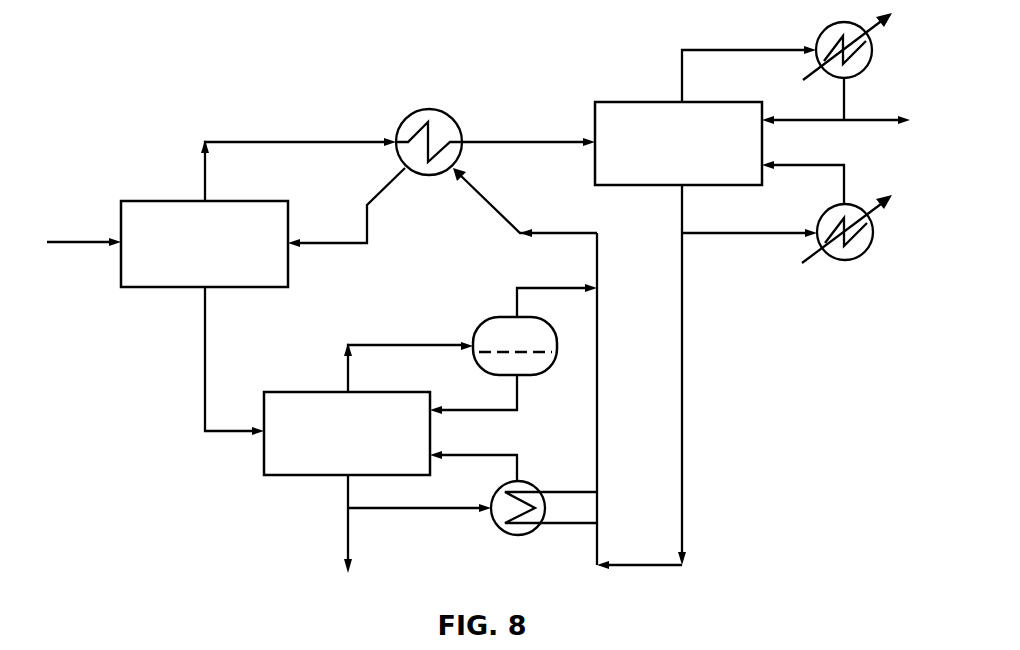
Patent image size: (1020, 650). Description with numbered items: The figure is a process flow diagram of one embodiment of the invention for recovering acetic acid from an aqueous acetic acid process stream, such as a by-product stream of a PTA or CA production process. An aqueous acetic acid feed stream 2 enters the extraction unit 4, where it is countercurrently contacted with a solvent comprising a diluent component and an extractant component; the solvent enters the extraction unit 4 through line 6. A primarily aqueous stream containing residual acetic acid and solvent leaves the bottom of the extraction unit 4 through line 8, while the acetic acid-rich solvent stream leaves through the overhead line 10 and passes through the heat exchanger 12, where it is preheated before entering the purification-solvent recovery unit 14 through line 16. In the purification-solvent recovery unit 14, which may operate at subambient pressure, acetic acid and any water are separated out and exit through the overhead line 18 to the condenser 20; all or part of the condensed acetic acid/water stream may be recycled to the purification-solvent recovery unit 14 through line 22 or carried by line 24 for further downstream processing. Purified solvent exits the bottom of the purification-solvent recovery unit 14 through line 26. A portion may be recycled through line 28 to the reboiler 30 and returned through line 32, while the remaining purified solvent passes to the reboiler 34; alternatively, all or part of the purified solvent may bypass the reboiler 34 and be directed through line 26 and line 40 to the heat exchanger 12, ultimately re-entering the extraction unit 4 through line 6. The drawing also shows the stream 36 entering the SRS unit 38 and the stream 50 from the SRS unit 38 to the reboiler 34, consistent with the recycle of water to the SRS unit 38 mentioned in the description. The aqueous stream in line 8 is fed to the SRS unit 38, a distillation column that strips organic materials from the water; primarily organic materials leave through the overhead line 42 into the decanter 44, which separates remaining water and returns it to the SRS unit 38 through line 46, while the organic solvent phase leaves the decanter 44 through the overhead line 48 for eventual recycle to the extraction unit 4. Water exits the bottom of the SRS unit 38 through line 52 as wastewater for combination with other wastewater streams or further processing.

The aqueous acetic acid feed stream 2 is at (82, 244).
The extraction unit 4 is at (153, 198).
The line 6 is at (335, 243).
The line 8 is at (202, 350).
The overhead line 10 is at (283, 140).
The heat exchanger 12 is at (437, 108).
The purification-solvent recovery unit 14 is at (625, 100).
The line 16 is at (513, 140).
The overhead line 18 is at (750, 48).
The condenser 20 is at (820, 30).
The line 22 is at (797, 118).
The line 24 is at (867, 118).
The line 26 is at (680, 210).
The line 28 is at (738, 237).
The reboiler 30 is at (847, 262).
The line 32 is at (845, 167).
The reboiler 34 is at (523, 535).
The stripping vapor return stream 36 is at (483, 453).
The SRS unit 38 is at (302, 390).
The line 40 is at (599, 392).
The overhead line 42 is at (407, 343).
The decanter 44 is at (500, 343).
The line 46 is at (518, 395).
The overhead line 48 is at (548, 280).
The stripper bottoms to reboiler stream 50 is at (397, 510).
The line 52 is at (345, 537).